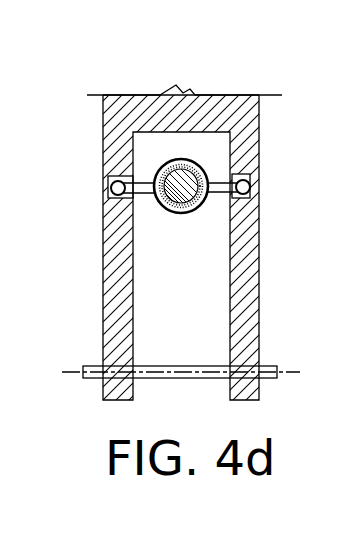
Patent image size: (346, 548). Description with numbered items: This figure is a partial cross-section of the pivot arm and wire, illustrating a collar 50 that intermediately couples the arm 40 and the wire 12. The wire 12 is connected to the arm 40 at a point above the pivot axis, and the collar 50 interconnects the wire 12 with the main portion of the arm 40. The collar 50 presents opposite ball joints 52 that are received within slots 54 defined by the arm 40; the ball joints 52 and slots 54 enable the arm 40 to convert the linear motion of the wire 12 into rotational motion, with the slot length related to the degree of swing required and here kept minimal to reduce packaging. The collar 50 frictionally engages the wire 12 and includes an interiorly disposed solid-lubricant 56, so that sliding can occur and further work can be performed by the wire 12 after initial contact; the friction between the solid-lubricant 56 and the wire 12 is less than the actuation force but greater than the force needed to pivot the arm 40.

The arm 40 is at (259, 290).
The collar 50 is at (157, 146).
The slots 54 is at (240, 172).
The ball joints 52 is at (243, 178).
The wire 12 is at (190, 192).
The solid-lubricant 56 is at (186, 198).